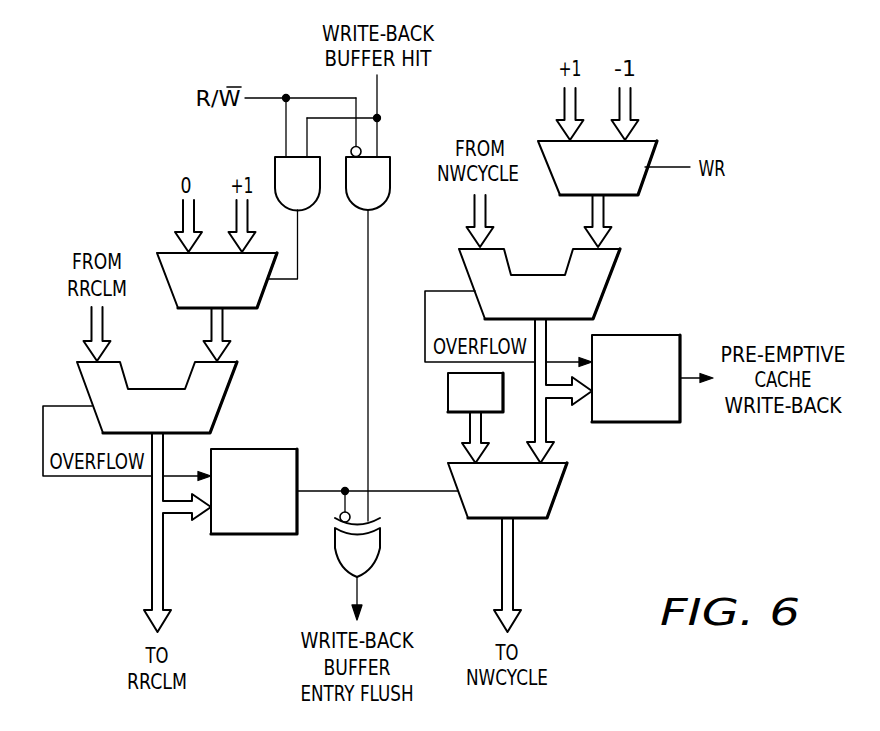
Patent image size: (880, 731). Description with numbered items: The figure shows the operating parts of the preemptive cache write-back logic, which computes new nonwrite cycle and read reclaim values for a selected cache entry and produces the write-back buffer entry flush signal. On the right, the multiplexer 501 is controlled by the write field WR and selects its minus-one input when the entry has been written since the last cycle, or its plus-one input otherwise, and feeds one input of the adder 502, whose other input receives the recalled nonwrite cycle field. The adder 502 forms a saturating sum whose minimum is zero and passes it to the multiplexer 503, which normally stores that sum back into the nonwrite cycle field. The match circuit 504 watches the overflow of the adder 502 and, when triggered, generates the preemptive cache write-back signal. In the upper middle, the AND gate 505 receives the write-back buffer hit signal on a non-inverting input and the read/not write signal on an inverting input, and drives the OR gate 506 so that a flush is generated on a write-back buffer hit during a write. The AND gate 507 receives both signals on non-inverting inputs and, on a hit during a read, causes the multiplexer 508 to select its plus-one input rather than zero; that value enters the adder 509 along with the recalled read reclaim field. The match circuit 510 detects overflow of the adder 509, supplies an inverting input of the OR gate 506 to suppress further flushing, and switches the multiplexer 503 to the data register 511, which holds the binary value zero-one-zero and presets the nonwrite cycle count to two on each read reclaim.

The multiplexer 501 is at (650, 141).
The adder 502 is at (612, 276).
The multiplexer 503 is at (560, 490).
The match circuit 504 is at (636, 423).
The AND gate 505 is at (380, 207).
The OR gate 506 is at (372, 572).
The AND gate 507 is at (276, 160).
The multiplexer 508 is at (165, 253).
The adder 509 is at (80, 385).
The match circuit 510 is at (252, 535).
The 010 data register 511 is at (447, 390).